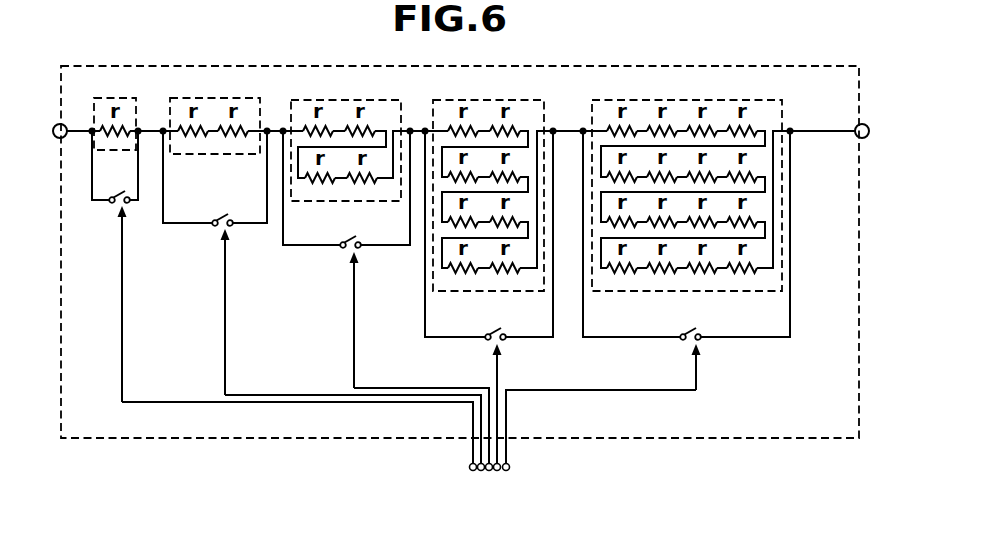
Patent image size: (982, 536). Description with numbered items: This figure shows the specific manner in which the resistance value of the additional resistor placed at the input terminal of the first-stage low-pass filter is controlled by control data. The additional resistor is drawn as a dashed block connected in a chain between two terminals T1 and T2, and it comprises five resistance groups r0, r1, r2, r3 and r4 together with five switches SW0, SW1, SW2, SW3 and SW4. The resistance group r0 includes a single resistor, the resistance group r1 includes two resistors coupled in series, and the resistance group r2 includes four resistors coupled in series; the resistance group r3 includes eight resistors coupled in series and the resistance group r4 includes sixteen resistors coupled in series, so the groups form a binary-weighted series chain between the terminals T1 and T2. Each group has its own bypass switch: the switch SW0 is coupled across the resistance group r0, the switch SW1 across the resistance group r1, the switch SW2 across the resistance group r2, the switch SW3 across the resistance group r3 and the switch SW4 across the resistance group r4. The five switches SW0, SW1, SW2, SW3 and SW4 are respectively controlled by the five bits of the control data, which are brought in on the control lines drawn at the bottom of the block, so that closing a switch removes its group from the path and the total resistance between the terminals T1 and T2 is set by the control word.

The first terminal T1 is at (52, 153).
The second terminal T2 is at (858, 141).
The resistance group r0 is at (102, 99).
The resistance group r1 is at (182, 99).
The resistance group r2 is at (298, 101).
The resistance group r3 is at (438, 101).
The resistance group r4 is at (600, 101).
The switch SW0 is at (109, 206).
The switch SW1 is at (212, 229).
The switch SW2 is at (340, 252).
The switch SW3 is at (485, 344).
The switch SW4 is at (680, 344).